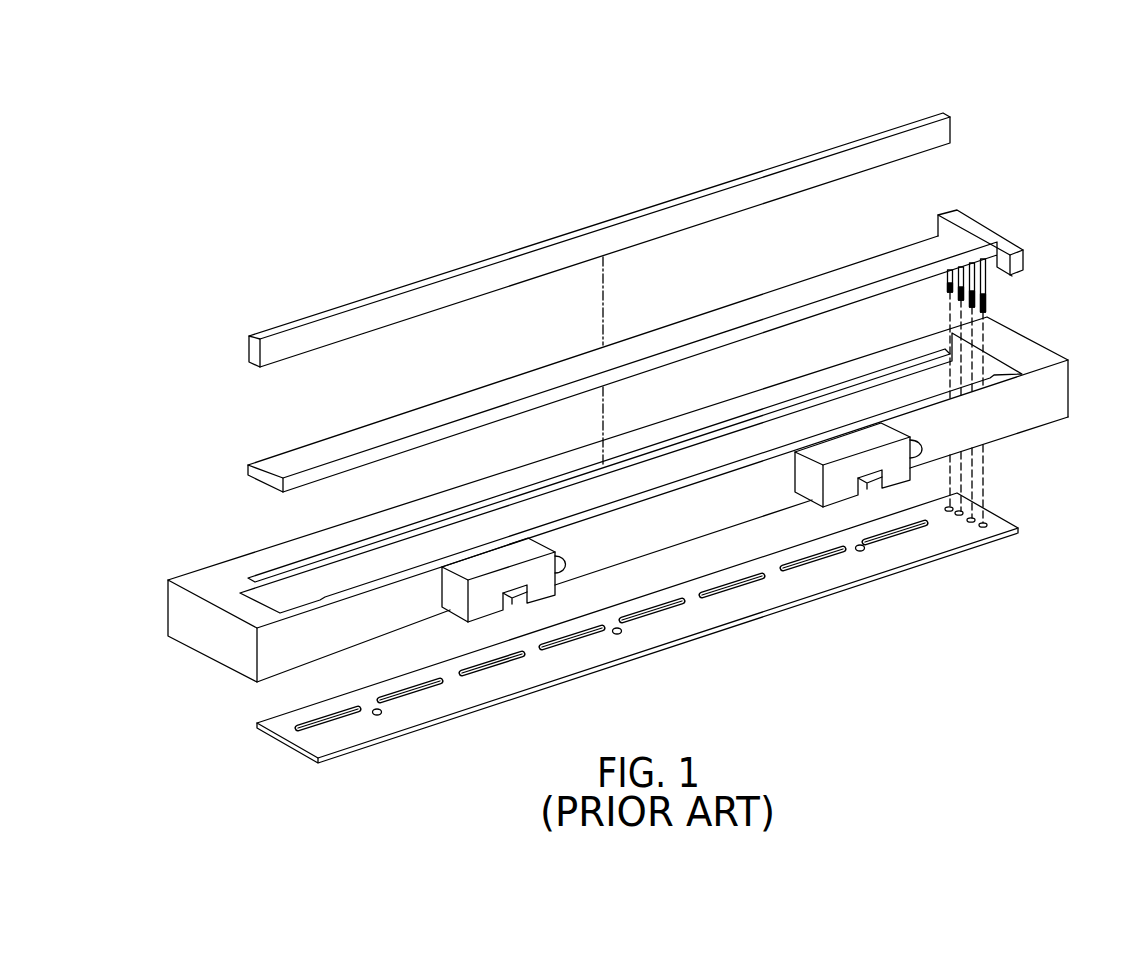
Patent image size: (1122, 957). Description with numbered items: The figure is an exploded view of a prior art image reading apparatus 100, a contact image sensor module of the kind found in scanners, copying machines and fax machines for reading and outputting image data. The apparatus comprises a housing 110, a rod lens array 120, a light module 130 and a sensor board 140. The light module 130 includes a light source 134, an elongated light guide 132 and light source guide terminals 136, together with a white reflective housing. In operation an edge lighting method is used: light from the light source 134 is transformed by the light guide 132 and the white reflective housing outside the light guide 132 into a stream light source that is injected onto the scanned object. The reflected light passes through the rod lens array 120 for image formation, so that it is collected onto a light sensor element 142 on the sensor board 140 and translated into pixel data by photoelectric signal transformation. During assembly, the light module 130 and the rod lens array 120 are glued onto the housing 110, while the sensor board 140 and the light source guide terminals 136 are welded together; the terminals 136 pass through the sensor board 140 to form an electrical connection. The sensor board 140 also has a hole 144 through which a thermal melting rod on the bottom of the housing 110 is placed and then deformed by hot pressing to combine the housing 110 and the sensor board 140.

The image reading apparatus 100 is at (1044, 117).
The housing 110 is at (202, 636).
The rod lens array 120 is at (308, 334).
The light module 130 is at (938, 207).
The light guide 132 is at (275, 462).
The light source 134 is at (998, 243).
The light source guide terminals 136 is at (982, 297).
The sensor board 140 is at (607, 632).
The light sensor element 142 is at (590, 633).
The hole 144 is at (868, 552).